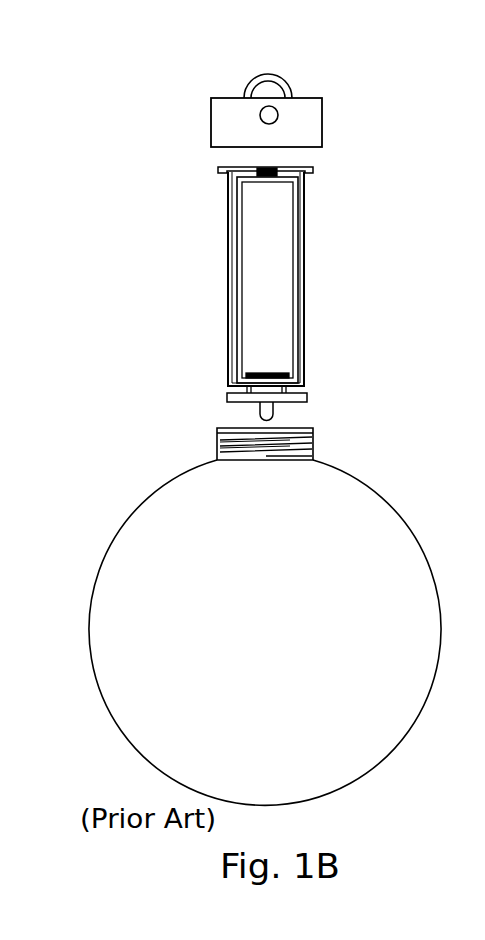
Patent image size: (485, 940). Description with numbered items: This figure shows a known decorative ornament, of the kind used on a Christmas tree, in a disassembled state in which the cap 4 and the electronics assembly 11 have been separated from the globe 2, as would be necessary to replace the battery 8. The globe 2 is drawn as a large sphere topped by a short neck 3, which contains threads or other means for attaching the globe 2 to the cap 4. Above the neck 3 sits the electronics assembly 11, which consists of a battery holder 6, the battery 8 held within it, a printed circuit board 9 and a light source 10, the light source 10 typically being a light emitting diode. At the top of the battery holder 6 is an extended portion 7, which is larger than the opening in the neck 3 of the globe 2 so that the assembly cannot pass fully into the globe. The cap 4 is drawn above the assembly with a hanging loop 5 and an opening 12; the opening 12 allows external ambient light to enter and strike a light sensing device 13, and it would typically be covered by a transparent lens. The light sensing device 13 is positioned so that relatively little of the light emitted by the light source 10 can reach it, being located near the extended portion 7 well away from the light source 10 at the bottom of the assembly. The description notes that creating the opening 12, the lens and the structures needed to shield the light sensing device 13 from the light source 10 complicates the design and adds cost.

The globe 2 is at (147, 570).
The neck 3 is at (315, 435).
The cap 4 is at (298, 121).
The hanging hook 5 is at (262, 76).
The battery holder 6 is at (228, 302).
The extended portion 7 is at (219, 168).
The battery 8 is at (257, 252).
The printed circuit board 9 is at (228, 392).
The light source 10 is at (253, 405).
The electronics assembly 11 is at (319, 252).
The opening 12 is at (264, 112).
The light sensing device 13 is at (282, 168).